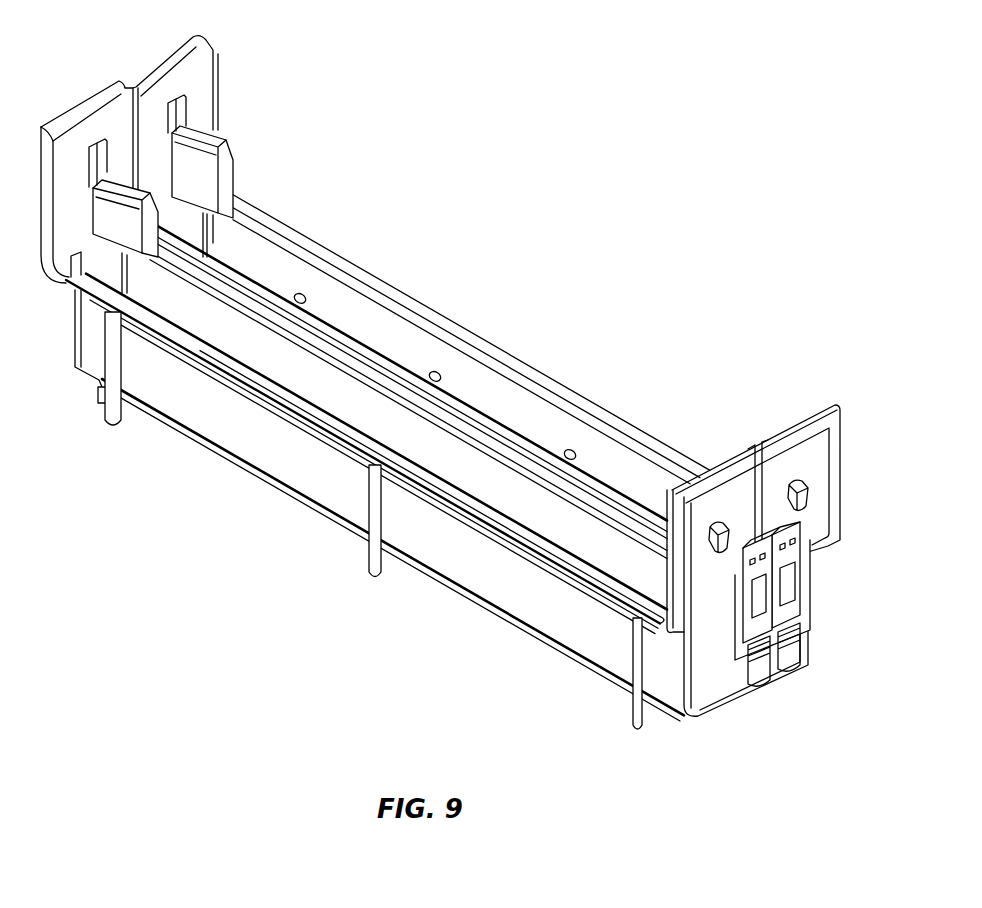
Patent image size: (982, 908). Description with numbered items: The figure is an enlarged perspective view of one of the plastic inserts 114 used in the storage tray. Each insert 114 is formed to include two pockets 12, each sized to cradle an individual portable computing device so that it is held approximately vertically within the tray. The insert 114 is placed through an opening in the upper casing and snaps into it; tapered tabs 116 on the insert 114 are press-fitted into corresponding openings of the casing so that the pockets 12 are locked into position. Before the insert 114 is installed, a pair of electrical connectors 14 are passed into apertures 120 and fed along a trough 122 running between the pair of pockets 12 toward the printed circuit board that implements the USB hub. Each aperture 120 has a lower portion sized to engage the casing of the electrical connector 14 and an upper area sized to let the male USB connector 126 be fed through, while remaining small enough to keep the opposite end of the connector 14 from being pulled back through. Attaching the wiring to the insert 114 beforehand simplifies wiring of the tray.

The pocket 12 is at (440, 382).
The electrical connector 14 is at (110, 200).
The insert 114 is at (393, 276).
The tapered tab 116 is at (808, 486).
The aperture 120 is at (180, 102).
The trough 122 is at (264, 300).
The male USB connector 126 is at (745, 600).